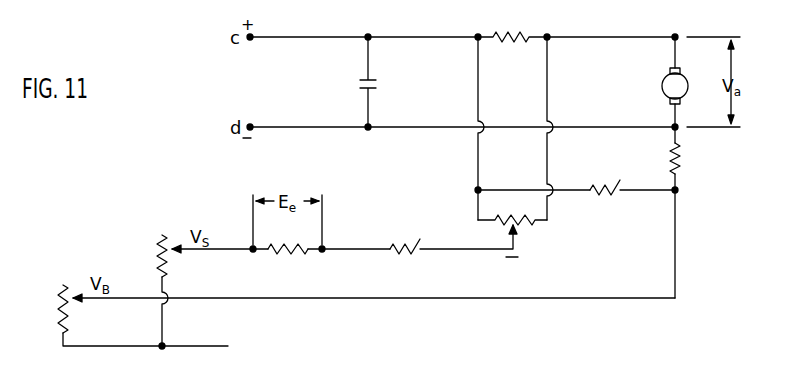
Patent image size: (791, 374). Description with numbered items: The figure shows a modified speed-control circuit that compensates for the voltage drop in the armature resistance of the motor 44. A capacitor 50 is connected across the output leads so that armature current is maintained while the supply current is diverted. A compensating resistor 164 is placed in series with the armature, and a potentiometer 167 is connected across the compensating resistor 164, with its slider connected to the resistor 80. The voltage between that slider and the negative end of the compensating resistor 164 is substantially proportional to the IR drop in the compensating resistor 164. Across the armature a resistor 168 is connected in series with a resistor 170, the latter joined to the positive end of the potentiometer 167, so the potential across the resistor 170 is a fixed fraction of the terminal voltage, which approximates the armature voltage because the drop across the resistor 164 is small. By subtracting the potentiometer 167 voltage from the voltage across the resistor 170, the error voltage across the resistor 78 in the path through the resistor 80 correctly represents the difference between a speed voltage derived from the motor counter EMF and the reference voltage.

The capacitor 50 is at (383, 82).
The compensating resistor 164 is at (510, 26).
The motor armature 44 is at (660, 82).
The resistor 168 is at (693, 158).
The resistor 170 is at (603, 194).
The potentiometer 167 is at (524, 224).
The resistor 78 is at (288, 261).
The resistor 80 is at (405, 258).